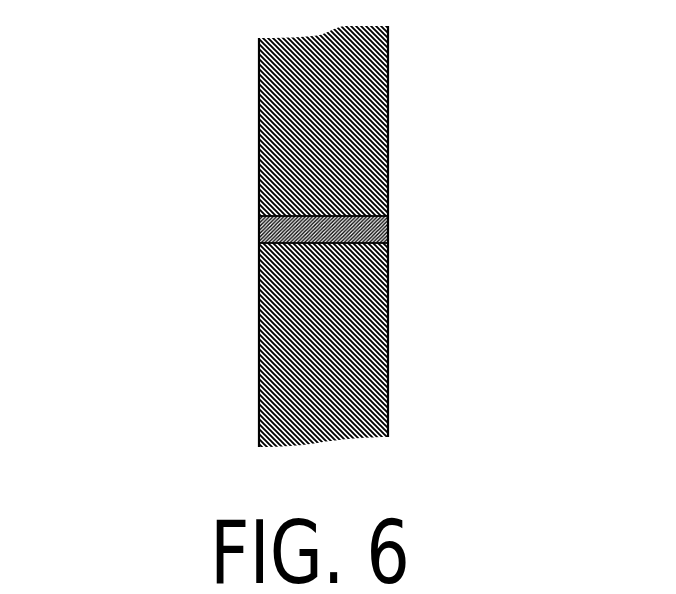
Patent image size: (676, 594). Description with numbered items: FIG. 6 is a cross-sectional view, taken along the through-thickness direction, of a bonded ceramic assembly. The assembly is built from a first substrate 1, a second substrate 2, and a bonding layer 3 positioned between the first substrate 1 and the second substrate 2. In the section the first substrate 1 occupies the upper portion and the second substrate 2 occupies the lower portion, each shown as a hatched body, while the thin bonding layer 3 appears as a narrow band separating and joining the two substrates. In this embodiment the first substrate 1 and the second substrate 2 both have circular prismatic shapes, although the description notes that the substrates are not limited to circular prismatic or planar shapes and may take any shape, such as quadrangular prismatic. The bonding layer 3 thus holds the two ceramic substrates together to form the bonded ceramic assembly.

The first substrate 1 is at (388, 135).
The second substrate 2 is at (388, 318).
The bonding layer 3 is at (262, 221).